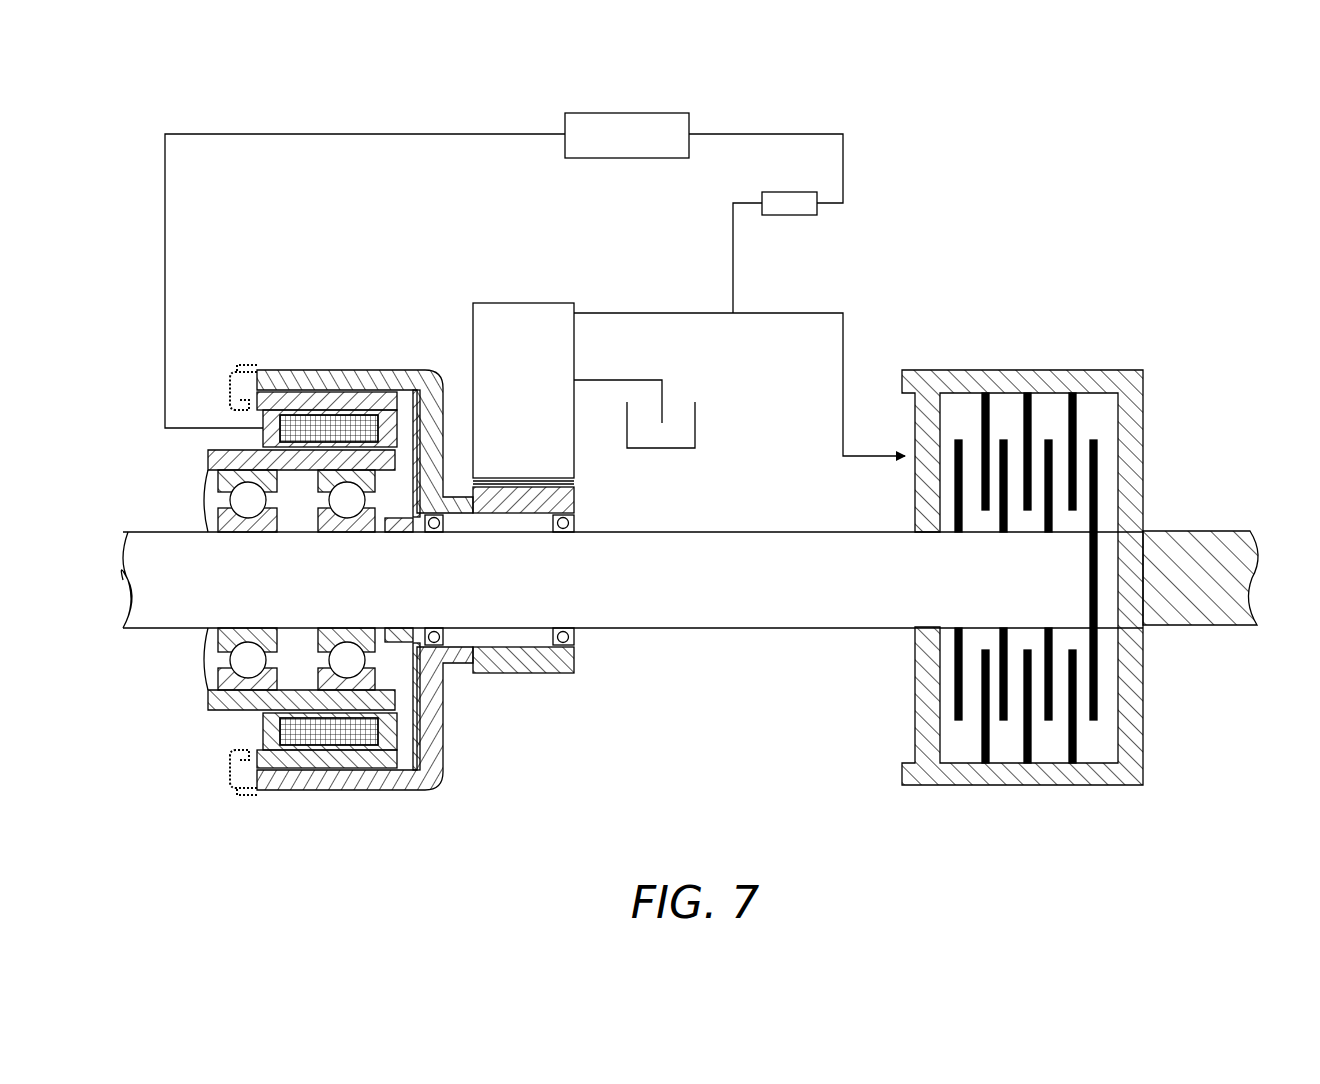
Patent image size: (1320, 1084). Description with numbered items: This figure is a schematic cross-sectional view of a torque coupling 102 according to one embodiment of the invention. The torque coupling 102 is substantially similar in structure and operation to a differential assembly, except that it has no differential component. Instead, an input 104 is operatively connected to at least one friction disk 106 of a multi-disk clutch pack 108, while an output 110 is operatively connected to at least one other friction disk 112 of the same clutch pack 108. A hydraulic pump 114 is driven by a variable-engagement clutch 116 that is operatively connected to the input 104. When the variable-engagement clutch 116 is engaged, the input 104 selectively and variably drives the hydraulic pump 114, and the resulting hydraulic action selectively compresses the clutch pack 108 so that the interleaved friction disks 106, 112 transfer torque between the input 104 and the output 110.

The torque coupling 102 is at (972, 196).
The input 104 is at (632, 580).
The friction disk 106 is at (1048, 717).
The multi-disk clutch pack 108 is at (953, 430).
The output 110 is at (1220, 545).
The friction disk 112 is at (1027, 648).
The hydraulic pump 114 is at (490, 303).
The variable-engagement clutch 116 is at (325, 362).